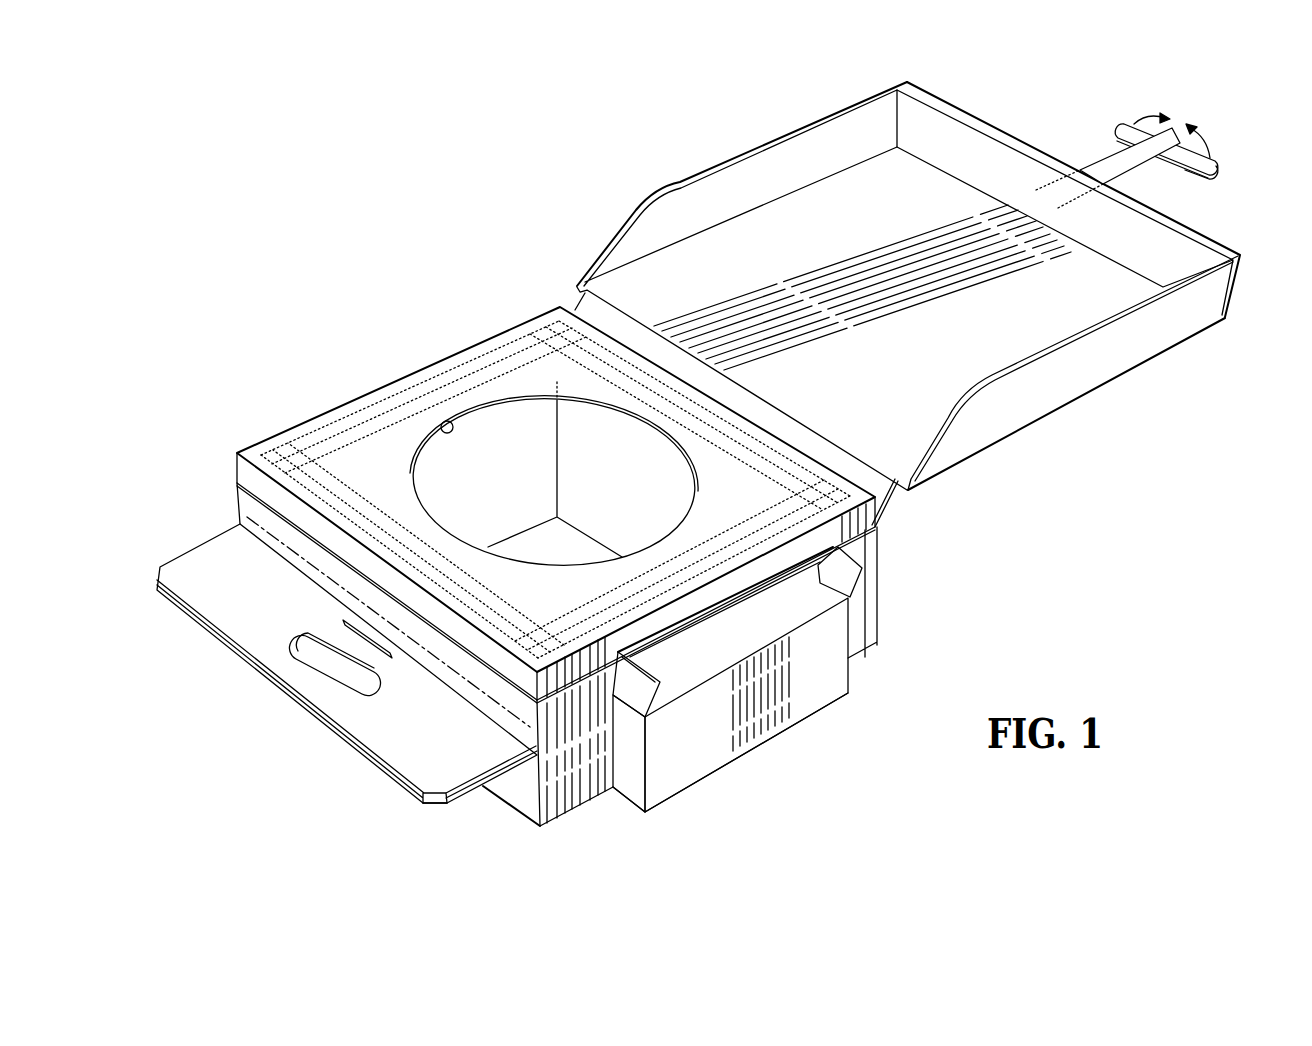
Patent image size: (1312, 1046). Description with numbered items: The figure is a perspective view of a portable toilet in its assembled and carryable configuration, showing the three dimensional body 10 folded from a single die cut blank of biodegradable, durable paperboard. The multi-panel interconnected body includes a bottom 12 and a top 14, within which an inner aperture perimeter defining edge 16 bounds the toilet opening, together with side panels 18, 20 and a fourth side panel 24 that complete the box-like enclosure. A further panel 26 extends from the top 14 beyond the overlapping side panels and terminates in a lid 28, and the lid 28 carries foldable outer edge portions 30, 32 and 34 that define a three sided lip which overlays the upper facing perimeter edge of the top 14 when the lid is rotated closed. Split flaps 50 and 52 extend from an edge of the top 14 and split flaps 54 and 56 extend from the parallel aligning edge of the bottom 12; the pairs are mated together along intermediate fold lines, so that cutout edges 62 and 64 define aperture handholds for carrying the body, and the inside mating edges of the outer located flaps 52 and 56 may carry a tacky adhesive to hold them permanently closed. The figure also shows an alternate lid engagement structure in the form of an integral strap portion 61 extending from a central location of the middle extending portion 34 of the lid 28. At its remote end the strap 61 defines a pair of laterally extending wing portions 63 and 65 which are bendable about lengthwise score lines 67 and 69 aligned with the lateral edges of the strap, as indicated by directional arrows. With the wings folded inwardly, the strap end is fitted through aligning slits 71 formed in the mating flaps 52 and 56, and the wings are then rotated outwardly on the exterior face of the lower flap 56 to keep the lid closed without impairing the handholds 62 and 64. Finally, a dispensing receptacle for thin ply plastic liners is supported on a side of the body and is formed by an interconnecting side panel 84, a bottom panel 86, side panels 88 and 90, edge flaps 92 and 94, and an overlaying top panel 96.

The body 10 is at (461, 236).
The bottom 12 is at (578, 808).
The top 14 is at (512, 393).
The inner aperture perimeter defining edge 16 is at (446, 426).
The side panel 18 is at (502, 505).
The side panel 20 is at (863, 615).
The fourth side panel 24 is at (647, 498).
The panel 26 is at (883, 490).
The lid 28 is at (897, 378).
The foldable outer edge portion 30 is at (1078, 368).
The foldable outer edge portion 32 is at (752, 172).
The middle extending portion 34 is at (927, 127).
The split flap 50 is at (250, 522).
The split flap 52 is at (207, 557).
The split flap 54 is at (507, 803).
The split flap 56 is at (472, 799).
The strap portion 61 is at (1140, 178).
The cutout edge 62 is at (290, 627).
The wing portion 63 is at (1125, 124).
The cutout edge 64 is at (330, 657).
The wing portion 65 is at (1212, 162).
The score line 67 is at (1113, 137).
The score line 69 is at (1177, 145).
The slit 71 is at (343, 620).
The side panel 84 is at (713, 743).
The bottom panel 86 is at (630, 802).
The side panel 88 is at (640, 771).
The side panel 90 is at (847, 680).
The edge flap 92 is at (643, 698).
The edge flap 94 is at (852, 583).
The top panel 96 is at (725, 609).